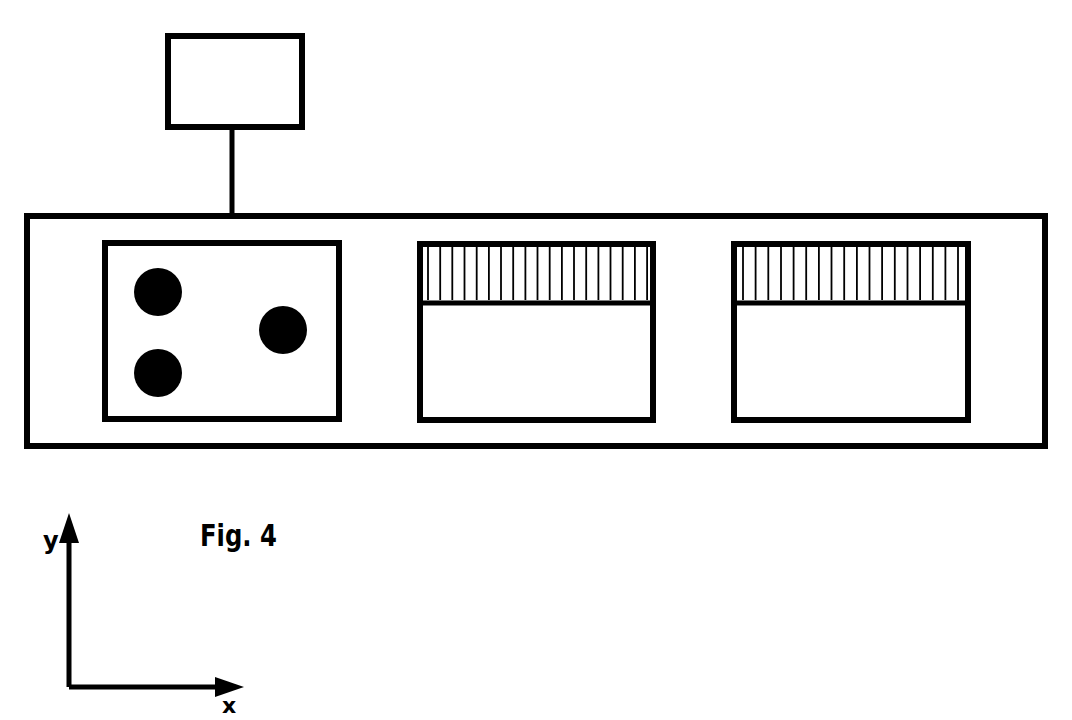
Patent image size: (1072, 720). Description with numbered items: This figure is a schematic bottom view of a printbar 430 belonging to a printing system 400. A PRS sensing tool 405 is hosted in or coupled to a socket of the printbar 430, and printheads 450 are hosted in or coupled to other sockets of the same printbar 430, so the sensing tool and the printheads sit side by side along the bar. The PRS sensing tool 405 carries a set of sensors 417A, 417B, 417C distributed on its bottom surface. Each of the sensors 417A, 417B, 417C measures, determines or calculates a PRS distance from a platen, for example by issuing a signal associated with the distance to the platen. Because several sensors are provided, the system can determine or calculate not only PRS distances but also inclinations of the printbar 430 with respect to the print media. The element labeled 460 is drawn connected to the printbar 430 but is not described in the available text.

The printing system 400 is at (536, 229).
The PRS sensing tool 405 is at (342, 373).
The sensor 417A is at (197, 277).
The sensor 417B is at (268, 353).
The sensor 417C is at (181, 372).
The printbar 430 is at (382, 212).
The printhead 450 is at (652, 350).
The controller 460 is at (303, 93).